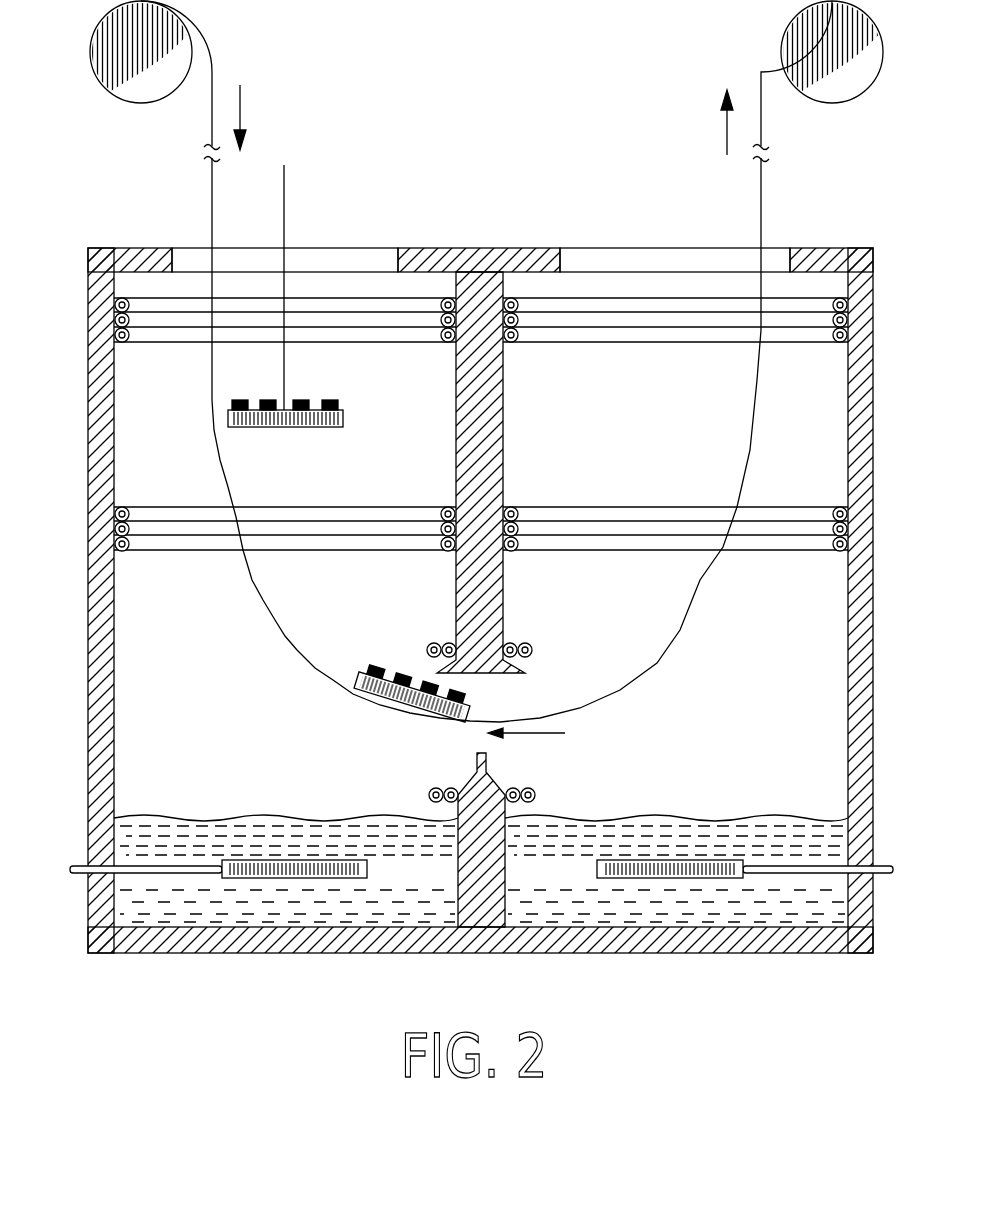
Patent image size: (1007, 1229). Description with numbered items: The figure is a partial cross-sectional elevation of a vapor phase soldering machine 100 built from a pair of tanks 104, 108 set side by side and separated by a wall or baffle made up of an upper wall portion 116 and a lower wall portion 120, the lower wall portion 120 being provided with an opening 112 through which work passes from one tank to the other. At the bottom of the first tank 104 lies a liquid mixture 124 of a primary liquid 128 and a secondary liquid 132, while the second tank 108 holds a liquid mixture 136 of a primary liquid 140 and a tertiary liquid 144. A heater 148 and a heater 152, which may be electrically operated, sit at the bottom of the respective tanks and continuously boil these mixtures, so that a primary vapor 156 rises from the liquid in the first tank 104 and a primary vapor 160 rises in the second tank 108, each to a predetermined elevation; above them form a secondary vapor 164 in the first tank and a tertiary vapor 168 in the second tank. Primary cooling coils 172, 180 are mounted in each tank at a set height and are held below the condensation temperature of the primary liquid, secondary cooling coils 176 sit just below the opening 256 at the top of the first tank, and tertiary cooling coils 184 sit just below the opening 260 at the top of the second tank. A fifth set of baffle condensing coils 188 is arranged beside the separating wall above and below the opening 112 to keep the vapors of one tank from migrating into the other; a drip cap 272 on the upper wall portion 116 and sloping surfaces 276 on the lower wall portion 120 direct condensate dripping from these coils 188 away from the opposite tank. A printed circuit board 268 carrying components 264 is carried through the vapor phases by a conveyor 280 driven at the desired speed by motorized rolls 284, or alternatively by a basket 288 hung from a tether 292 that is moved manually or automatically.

The vapor phase soldering machine 100 is at (434, 136).
The first tank 104 is at (95, 247).
The second tank 108 is at (866, 247).
The opening 112 is at (549, 732).
The upper wall portion 116 is at (503, 570).
The lower wall portion 120 is at (508, 880).
The liquid mixture 124 is at (143, 825).
The primary liquid 128 is at (216, 825).
The secondary liquid 132 is at (358, 825).
The liquid mixture 136 is at (598, 825).
The primary liquid 140 is at (692, 825).
The tertiary liquid 144 is at (764, 825).
The heater 148 is at (282, 880).
The heater 152 is at (647, 880).
The primary vapor 156 is at (172, 663).
The primary vapor 160 is at (733, 666).
The secondary vapor 164 is at (137, 441).
The tertiary vapor 168 is at (783, 433).
The primary cooling coils 172 is at (362, 507).
The secondary cooling coils 176 is at (186, 337).
The primary cooling coils 180 is at (558, 507).
The tertiary cooling coils 184 is at (563, 335).
The baffle condensing coils 188 is at (433, 643).
The opening 256 is at (340, 247).
The opening 260 is at (630, 247).
The components 264 is at (240, 400).
The printed circuit board 268 is at (345, 418).
The drip cap 272 is at (440, 664).
The sloping surfaces 276 is at (463, 785).
The conveyor 280 is at (212, 200).
The motorized rolls 284 is at (140, 100).
The basket 288 is at (258, 427).
The tether 292 is at (284, 195).